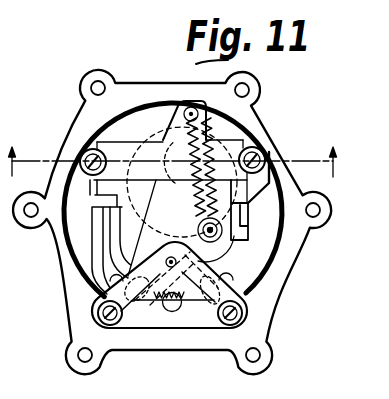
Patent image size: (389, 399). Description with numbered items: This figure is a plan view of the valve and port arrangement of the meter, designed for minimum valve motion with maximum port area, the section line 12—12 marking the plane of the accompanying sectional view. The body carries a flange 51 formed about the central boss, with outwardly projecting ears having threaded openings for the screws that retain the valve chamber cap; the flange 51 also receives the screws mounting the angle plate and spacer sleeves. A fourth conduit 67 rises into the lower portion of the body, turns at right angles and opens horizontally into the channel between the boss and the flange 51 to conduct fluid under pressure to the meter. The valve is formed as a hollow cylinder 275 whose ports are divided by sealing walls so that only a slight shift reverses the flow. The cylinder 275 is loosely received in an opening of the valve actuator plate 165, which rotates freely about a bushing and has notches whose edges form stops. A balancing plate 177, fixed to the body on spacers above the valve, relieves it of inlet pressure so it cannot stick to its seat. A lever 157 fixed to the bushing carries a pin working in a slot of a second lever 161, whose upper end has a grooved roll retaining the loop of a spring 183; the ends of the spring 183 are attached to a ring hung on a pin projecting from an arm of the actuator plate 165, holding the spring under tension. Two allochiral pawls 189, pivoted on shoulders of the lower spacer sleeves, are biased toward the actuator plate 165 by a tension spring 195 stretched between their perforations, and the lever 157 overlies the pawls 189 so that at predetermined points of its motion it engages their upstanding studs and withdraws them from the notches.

The section line 12- 12 is at (180, 162).
The flange 51 is at (60, 257).
The fourth conduit 67 is at (170, 311).
The lever 157 is at (150, 220).
The lever 161 is at (243, 248).
The valve actuator plate 165 is at (104, 194).
The balancing plate 177 is at (244, 148).
The spring 183 is at (207, 136).
The allochiral pawls 189 is at (245, 237).
The tension spring 195 is at (128, 308).
The hollow cylinder 275 is at (166, 134).